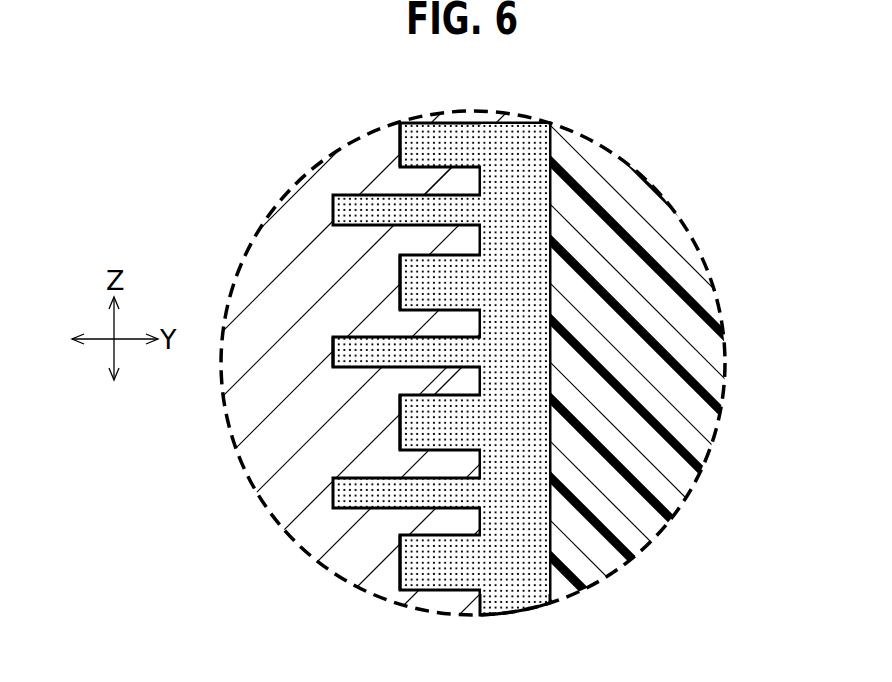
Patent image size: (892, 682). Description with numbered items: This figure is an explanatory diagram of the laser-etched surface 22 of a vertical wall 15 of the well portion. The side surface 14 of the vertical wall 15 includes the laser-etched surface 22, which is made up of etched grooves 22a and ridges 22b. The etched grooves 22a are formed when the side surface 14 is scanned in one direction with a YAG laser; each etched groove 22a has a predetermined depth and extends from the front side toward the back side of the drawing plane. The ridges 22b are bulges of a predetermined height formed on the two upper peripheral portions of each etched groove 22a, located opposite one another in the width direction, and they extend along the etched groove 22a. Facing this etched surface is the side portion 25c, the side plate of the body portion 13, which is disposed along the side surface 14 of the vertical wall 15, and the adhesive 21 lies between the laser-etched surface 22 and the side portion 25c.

The body portion 13 is at (446, 341).
The side portion 25c is at (597, 158).
The side surface 14 is at (400, 293).
The vertical wall 15 is at (363, 163).
The adhesive 21 is at (458, 133).
The laser-etched surface 22 is at (470, 363).
The etched groove 22a is at (335, 357).
The ridge 22b is at (462, 323).